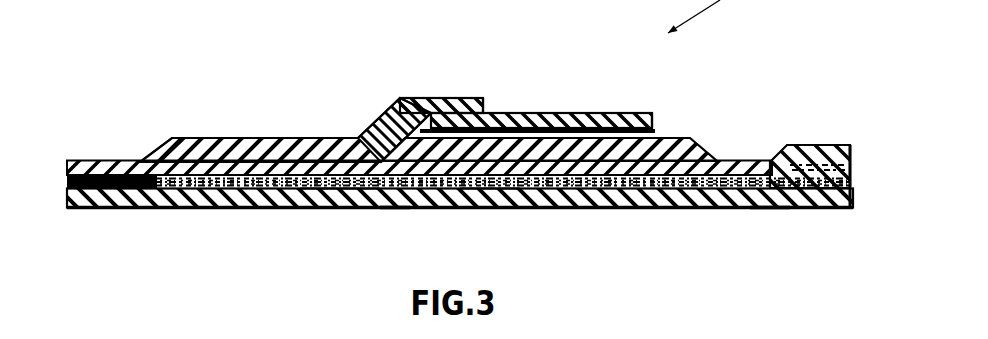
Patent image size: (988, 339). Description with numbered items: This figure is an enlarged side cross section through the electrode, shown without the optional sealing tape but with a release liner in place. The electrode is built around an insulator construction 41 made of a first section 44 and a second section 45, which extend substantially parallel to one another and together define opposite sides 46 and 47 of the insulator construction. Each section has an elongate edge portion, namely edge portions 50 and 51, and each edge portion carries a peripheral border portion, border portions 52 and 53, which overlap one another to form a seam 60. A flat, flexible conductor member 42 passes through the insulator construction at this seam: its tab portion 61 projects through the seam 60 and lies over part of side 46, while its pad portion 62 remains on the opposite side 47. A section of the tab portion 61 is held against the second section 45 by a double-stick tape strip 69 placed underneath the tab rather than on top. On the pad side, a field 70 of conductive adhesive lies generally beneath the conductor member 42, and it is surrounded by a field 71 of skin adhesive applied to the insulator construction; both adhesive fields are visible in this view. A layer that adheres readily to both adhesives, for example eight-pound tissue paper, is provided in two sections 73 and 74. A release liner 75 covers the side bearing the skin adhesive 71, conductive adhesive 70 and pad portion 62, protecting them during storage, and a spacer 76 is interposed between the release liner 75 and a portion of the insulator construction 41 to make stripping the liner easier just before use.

The insulator construction 41 is at (153, 148).
The conductor member 42 is at (660, 115).
The first section 44 is at (345, 135).
The second section 45 is at (692, 135).
The first side 46 is at (260, 137).
The second side 47 is at (292, 190).
The elongate edge portion of first section 50 is at (487, 107).
The elongate edge portion of second section 51 is at (428, 165).
The border portion of first section 52 is at (423, 110).
The border portion of second section 53 is at (488, 190).
The seam 60 is at (468, 100).
The tab portion 61 is at (593, 110).
The pad portion 62 is at (343, 185).
The double-stick tape strip 69 is at (550, 115).
The field of conductive adhesive 70 is at (392, 198).
The field of skin adhesive 71 is at (158, 207).
The tissue paper section 73 is at (610, 158).
The tissue paper section 74 is at (232, 183).
The release liner 75 is at (766, 193).
The spacer 76 is at (853, 173).